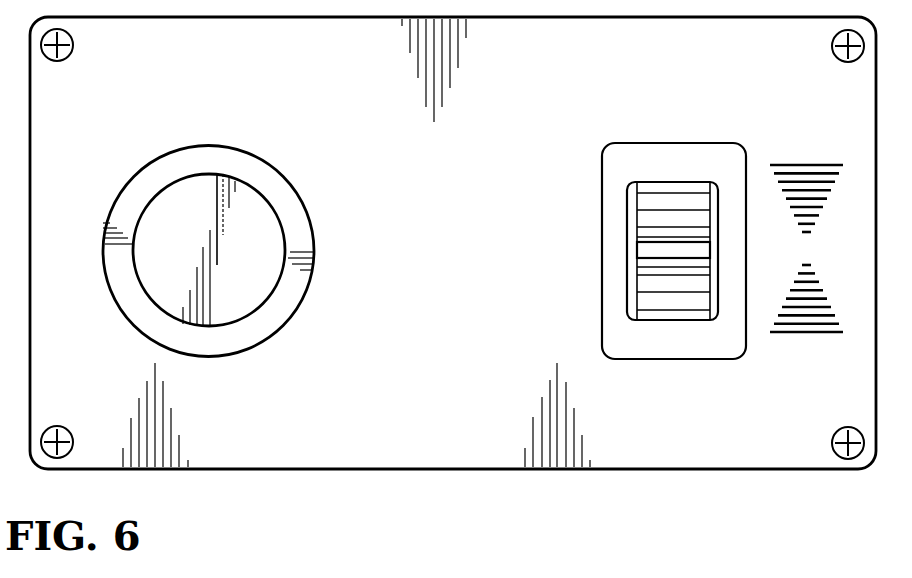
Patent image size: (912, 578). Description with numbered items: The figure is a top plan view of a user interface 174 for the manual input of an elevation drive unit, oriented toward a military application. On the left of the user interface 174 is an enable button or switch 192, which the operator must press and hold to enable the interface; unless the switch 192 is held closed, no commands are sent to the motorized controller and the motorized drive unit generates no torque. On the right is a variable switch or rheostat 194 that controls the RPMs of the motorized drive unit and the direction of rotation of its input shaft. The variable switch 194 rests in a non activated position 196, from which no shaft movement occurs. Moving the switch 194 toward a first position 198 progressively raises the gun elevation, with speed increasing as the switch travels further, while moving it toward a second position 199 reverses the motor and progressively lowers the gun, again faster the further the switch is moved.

The user interface 174 is at (455, 160).
The enable button or switch 192 is at (218, 308).
The variable switch or rheostat 194 is at (658, 292).
The non activated position 196 is at (650, 250).
The first position 198 is at (673, 182).
The second position 199 is at (673, 320).